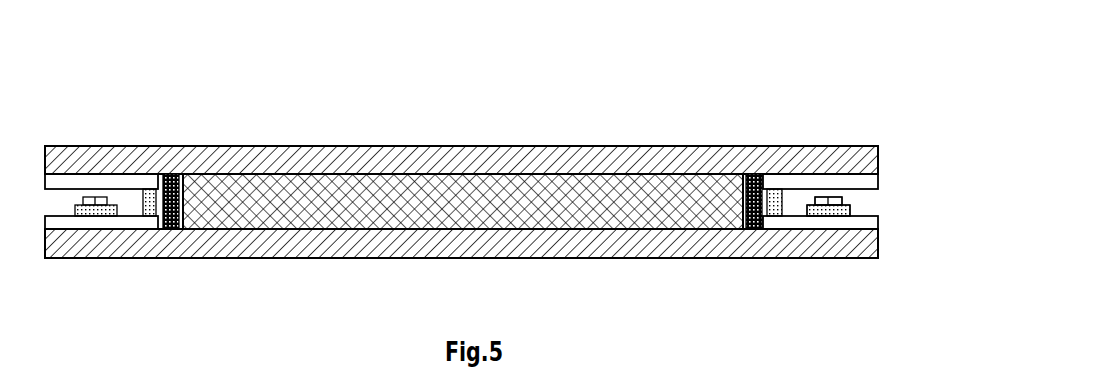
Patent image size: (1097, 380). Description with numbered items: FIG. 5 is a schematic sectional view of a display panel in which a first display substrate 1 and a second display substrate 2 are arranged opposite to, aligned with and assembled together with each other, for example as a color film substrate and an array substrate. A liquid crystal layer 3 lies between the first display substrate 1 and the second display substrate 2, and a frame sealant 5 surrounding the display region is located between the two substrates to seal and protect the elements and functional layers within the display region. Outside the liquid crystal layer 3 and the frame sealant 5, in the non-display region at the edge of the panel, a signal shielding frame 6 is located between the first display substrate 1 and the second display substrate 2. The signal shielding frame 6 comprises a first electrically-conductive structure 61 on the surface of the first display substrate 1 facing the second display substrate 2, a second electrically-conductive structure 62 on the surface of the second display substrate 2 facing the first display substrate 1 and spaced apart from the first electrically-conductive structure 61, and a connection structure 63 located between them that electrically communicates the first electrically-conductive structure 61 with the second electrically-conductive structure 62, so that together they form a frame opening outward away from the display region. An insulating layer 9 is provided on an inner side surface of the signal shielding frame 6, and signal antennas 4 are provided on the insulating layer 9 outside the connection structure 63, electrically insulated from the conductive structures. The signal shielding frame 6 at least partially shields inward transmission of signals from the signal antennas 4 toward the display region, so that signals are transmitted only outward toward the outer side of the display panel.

The first display substrate 1 is at (434, 155).
The second display substrate 2 is at (625, 234).
The liquid crystal layer 3 is at (300, 210).
The signal antennas 4 is at (90, 197).
The frame sealant 5 is at (750, 174).
The signal shielding frame 6 is at (497, 199).
The insulating layer 9 is at (100, 212).
The first electrically-conductive structure 61 is at (850, 181).
The second electrically-conductive structure 62 is at (850, 227).
The connection structure 63 is at (848, 208).